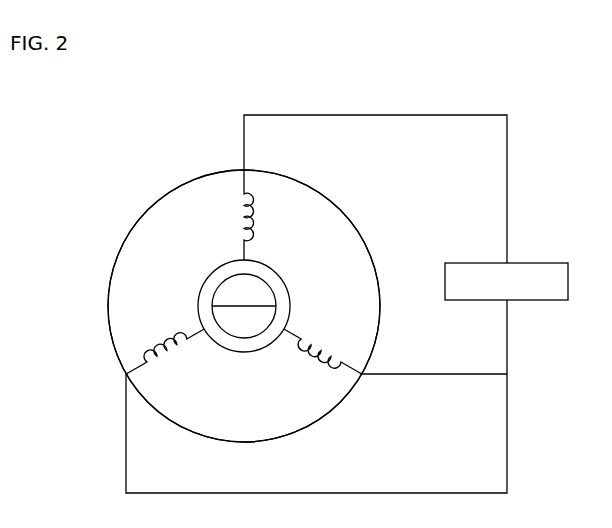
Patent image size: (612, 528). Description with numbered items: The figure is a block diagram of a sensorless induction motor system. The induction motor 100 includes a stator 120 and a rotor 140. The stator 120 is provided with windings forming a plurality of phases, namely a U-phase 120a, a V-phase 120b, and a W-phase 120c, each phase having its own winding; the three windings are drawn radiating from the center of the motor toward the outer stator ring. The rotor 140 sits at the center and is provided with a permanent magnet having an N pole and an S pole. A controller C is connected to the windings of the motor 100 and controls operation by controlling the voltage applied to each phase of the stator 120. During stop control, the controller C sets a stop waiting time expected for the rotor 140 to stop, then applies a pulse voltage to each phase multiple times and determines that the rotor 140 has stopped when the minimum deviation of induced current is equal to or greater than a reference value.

The motor 100 is at (128, 220).
The stator 120 is at (185, 182).
The U-phase 120a is at (257, 212).
The V-phase 120b is at (158, 343).
The W-phase 120c is at (323, 360).
The rotor 140 is at (268, 283).
The controller C is at (545, 263).